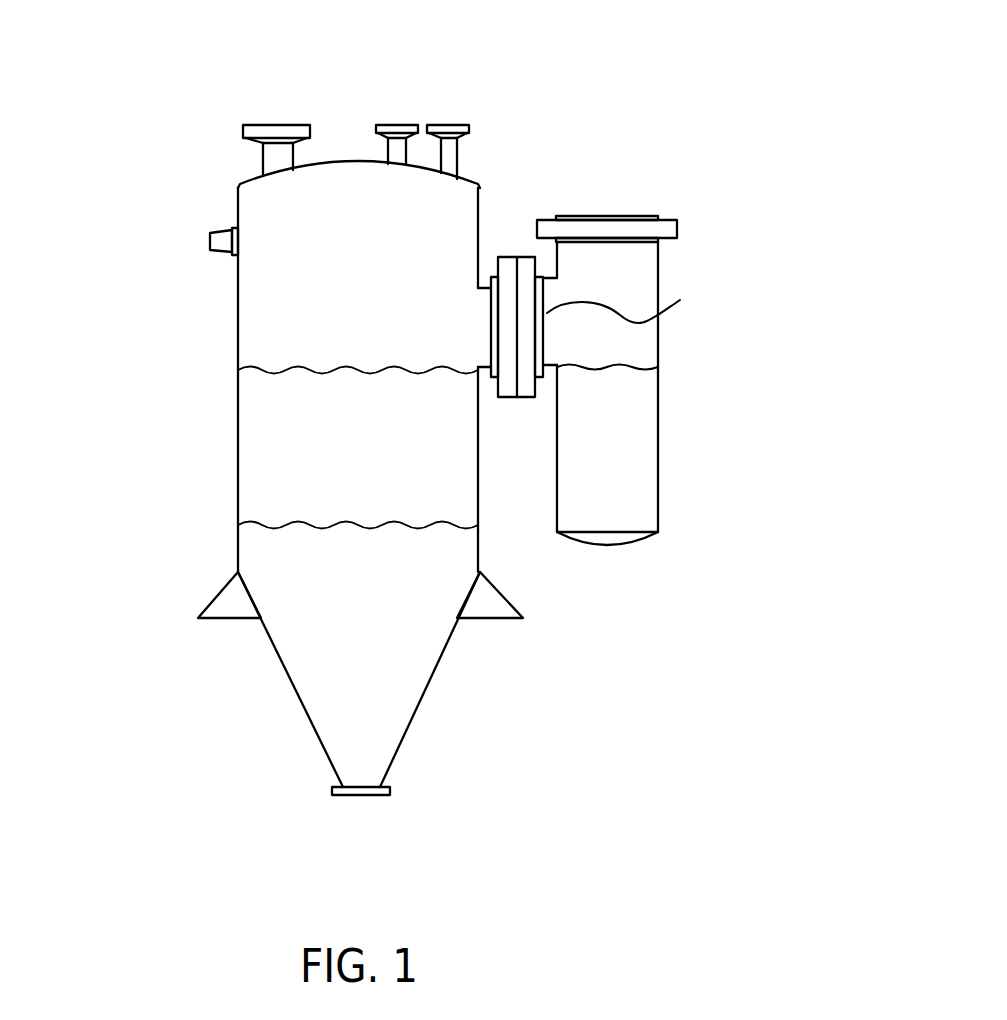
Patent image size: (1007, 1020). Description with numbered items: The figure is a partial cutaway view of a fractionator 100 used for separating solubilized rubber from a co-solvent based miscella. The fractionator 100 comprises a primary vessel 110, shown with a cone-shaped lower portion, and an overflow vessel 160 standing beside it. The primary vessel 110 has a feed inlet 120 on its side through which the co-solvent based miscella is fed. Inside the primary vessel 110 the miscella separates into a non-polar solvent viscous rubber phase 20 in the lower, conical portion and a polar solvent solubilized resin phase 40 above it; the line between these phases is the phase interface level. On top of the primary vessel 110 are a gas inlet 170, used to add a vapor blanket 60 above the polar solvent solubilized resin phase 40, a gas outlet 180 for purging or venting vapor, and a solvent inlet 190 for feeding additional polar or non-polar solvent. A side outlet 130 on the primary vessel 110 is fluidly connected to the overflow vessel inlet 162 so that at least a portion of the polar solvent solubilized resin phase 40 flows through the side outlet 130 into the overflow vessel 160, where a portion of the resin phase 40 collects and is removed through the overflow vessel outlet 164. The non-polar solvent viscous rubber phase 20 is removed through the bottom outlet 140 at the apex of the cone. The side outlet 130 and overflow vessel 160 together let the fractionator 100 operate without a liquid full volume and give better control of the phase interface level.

The fractionator 100 is at (610, 97).
The primary vessel 110 is at (237, 198).
The feed inlet 120 is at (210, 240).
The side outlet 130 is at (505, 257).
The bottom outlet 140 is at (360, 797).
The overflow vessel 160 is at (658, 428).
The overflow vessel inlet 162 is at (637, 306).
The overflow vessel outlet 164 is at (607, 548).
The gas inlet 170 is at (458, 155).
The gas outlet 180 is at (394, 124).
The solvent inlet 190 is at (263, 162).
The non-polar solvent viscous rubber phase 20 is at (381, 640).
The polar solvent solubilized resin phase 40 is at (381, 443).
The vapor blanket 60 is at (379, 280).